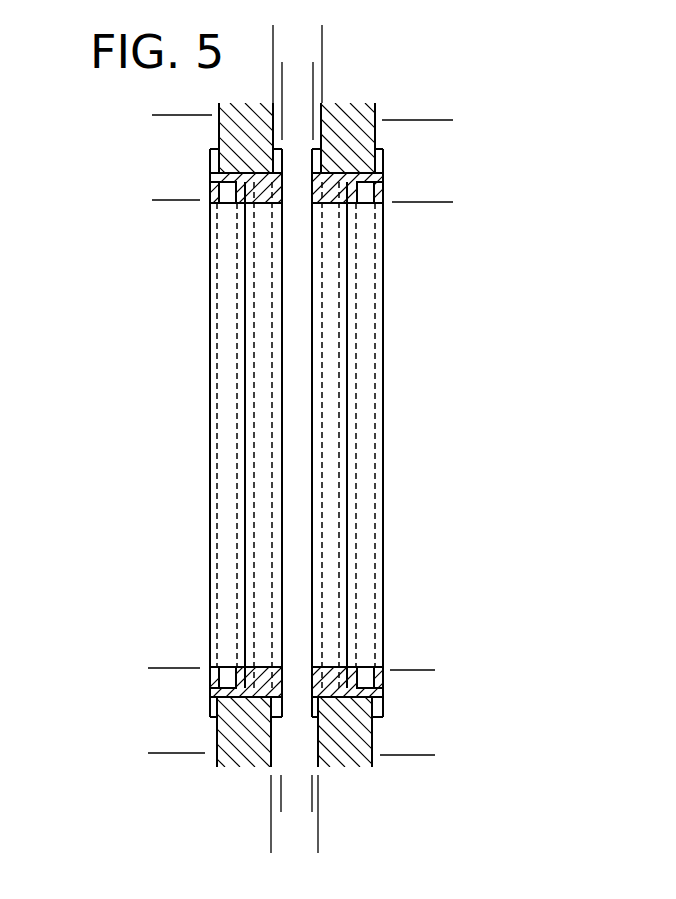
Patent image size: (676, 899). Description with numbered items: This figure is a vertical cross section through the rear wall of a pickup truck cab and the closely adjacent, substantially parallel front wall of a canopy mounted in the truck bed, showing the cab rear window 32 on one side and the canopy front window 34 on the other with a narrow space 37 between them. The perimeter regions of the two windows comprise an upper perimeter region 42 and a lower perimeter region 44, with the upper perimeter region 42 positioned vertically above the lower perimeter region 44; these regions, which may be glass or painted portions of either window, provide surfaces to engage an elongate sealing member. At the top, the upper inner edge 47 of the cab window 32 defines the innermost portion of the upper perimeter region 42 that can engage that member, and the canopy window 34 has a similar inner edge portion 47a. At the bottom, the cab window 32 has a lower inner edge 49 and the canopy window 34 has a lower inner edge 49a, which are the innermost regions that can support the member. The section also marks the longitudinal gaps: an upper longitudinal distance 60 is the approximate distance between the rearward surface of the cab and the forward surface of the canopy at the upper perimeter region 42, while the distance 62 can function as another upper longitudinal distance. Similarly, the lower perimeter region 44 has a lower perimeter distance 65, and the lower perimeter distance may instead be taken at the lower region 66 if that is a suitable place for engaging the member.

The cab rear window 32 is at (397, 497).
The canopy front window 34 is at (197, 495).
The gap between end plates 37 is at (292, 409).
The upper perimeter region 42 is at (444, 202).
The lower perimeter region 44 is at (427, 755).
The upper inner edge 47 is at (326, 205).
The upper inner edge portion 47a is at (274, 204).
The lower inner edge 49 is at (325, 665).
The lower inner edge 49a is at (272, 667).
The upper longitudinal distance 60 is at (262, 72).
The upper longitudinal distance 62 is at (273, 34).
The lower perimeter distance 65 is at (332, 802).
The lower perimeter distance 66 is at (318, 845).